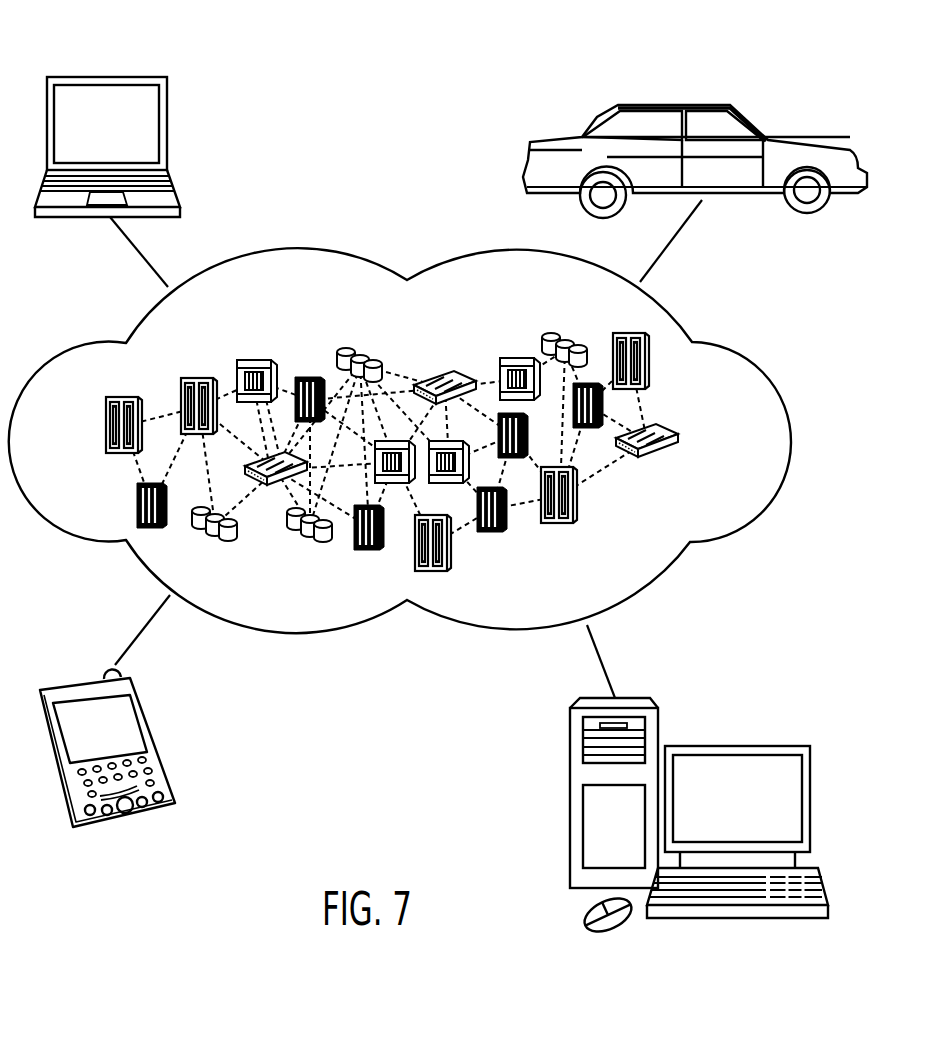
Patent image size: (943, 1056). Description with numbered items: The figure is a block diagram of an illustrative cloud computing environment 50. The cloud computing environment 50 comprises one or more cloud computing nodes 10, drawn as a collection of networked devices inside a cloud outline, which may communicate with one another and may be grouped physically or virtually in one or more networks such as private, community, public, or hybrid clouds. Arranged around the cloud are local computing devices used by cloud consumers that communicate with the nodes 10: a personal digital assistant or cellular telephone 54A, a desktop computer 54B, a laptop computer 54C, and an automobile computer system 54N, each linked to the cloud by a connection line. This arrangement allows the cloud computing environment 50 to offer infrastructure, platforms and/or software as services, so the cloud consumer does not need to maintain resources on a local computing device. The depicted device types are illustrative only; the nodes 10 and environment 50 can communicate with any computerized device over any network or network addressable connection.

The cloud computing node 10 is at (686, 440).
The cloud computing environment 50 is at (748, 345).
The personal digital assistant (PDA) or cellular telephone 54A is at (85, 680).
The desktop computer 54B is at (738, 745).
The laptop computer 54C is at (107, 75).
The automobile computer system 54N is at (673, 103).